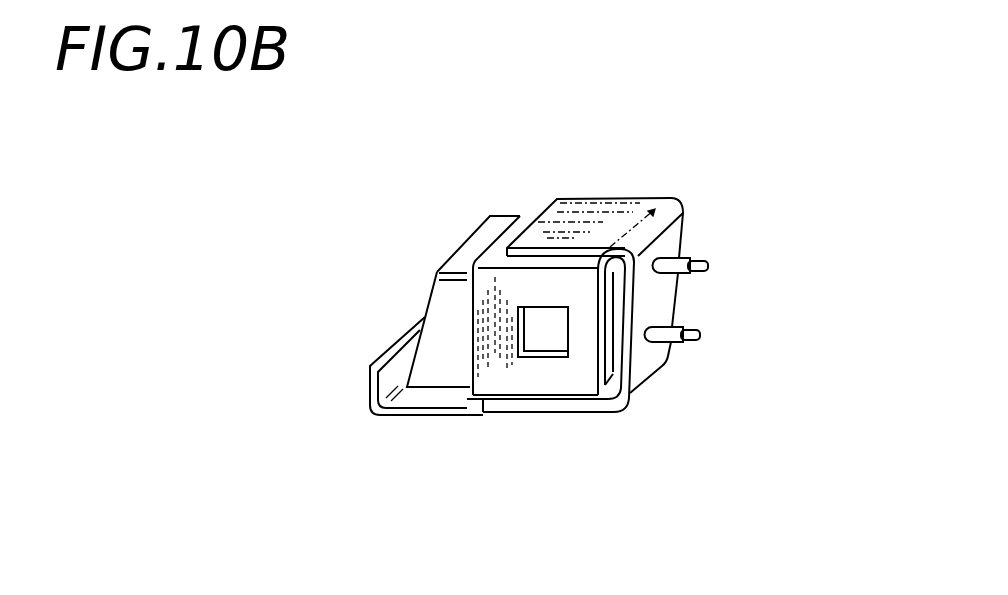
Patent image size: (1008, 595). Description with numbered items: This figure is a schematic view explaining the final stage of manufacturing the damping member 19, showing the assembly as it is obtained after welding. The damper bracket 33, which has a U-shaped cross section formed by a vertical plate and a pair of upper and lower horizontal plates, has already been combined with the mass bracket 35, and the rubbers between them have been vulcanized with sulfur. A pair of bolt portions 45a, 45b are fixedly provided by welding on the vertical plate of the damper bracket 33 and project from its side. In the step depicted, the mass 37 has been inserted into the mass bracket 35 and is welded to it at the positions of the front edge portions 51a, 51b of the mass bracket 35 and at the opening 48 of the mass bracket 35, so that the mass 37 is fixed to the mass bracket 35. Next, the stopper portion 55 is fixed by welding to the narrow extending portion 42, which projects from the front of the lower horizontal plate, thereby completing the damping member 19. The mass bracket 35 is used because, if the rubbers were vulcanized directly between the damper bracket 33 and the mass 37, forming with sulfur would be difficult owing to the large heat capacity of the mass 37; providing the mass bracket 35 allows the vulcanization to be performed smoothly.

The damping member 19 is at (677, 176).
The damper bracket 33 is at (593, 213).
The mass bracket 35 is at (512, 370).
The mass 37 is at (442, 298).
The extending portion 42 is at (455, 405).
The bolt portion 45a is at (689, 258).
The bolt portion 45b is at (669, 341).
The opening 48 is at (545, 358).
The front edge portion 51a is at (508, 215).
The front edge portion 51b is at (470, 412).
The stopper portion 55 is at (377, 413).